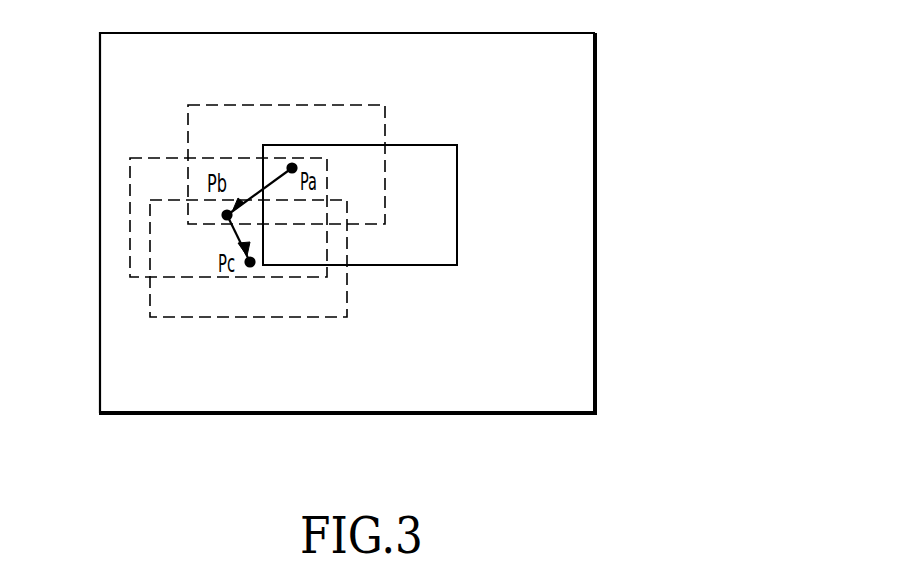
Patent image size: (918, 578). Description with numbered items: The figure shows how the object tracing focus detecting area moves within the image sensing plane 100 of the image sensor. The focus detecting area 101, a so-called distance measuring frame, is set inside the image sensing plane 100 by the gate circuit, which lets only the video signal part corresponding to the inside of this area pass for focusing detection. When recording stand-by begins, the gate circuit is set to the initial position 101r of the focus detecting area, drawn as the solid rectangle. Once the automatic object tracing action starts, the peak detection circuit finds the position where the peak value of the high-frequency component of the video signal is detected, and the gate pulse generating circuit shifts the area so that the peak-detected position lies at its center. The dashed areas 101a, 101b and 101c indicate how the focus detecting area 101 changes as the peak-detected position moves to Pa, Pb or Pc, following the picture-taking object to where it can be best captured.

The image sensing plane 100 is at (597, 303).
The focus detecting area 101 is at (457, 210).
The initial position of the focus detecting area 101r is at (437, 267).
The focus detecting area at peak-detected position Pa 101a is at (385, 110).
The focus detecting area at peak-detected position Pb 101b is at (130, 192).
The focus detecting area at peak-detected position Pc 101c is at (303, 320).